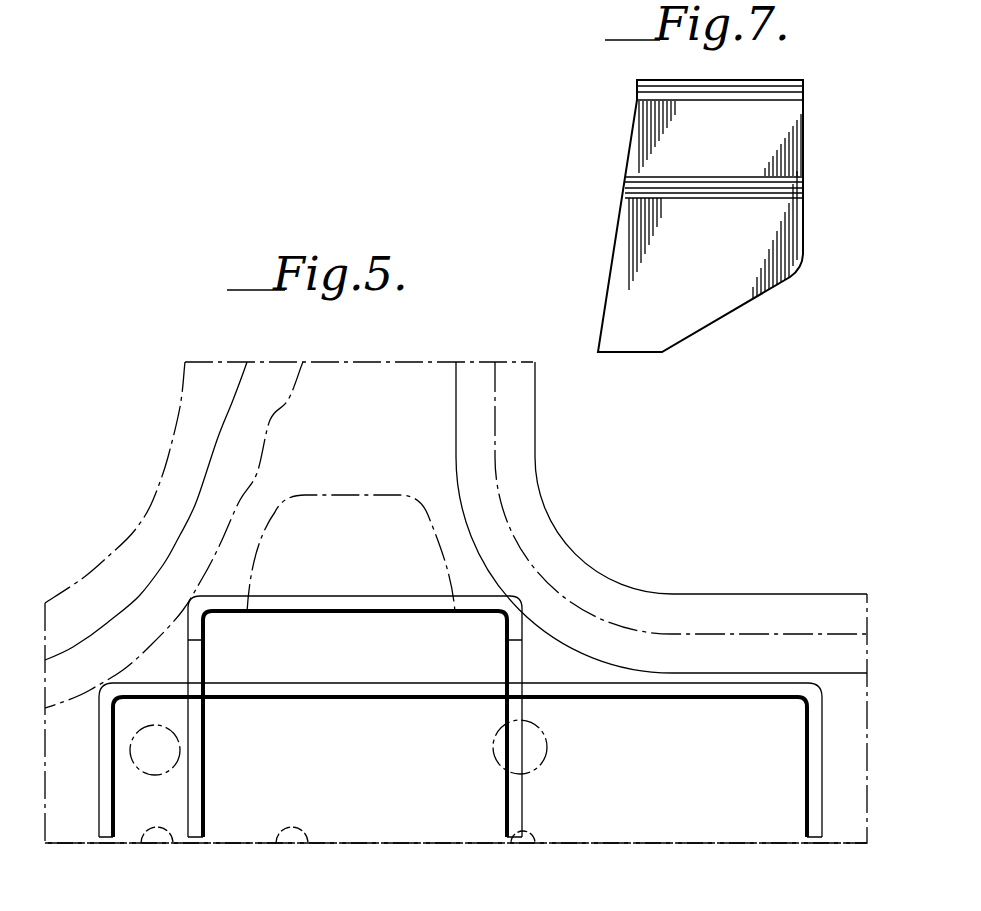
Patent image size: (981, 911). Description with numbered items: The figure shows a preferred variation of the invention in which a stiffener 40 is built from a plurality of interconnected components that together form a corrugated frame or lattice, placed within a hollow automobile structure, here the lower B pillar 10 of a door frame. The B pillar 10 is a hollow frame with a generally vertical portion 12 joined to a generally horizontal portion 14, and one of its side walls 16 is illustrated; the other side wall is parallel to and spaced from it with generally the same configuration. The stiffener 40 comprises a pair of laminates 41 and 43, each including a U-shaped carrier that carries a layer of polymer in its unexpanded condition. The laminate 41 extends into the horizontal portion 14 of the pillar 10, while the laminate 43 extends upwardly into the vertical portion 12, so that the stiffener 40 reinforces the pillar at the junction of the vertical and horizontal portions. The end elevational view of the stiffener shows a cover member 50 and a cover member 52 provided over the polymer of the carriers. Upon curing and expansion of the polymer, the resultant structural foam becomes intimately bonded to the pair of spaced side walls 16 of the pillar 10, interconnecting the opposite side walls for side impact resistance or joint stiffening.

In FIG. 5, the B pillar 10 is at (605, 540).
In FIG. 5, the vertical portion 12 is at (575, 437).
In FIG. 5, the horizontal portion 14 is at (718, 718).
In FIG. 5, the side wall 16 is at (375, 425).
In FIG. 5, the stiffener 40 is at (465, 710).
In FIG. 5, the laminate 41 is at (628, 732).
In FIG. 5, the laminate 43 is at (375, 596).
In FIG. 7, the cover member 50 is at (635, 82).
In FIG. 7, the cover member 52 is at (660, 241).